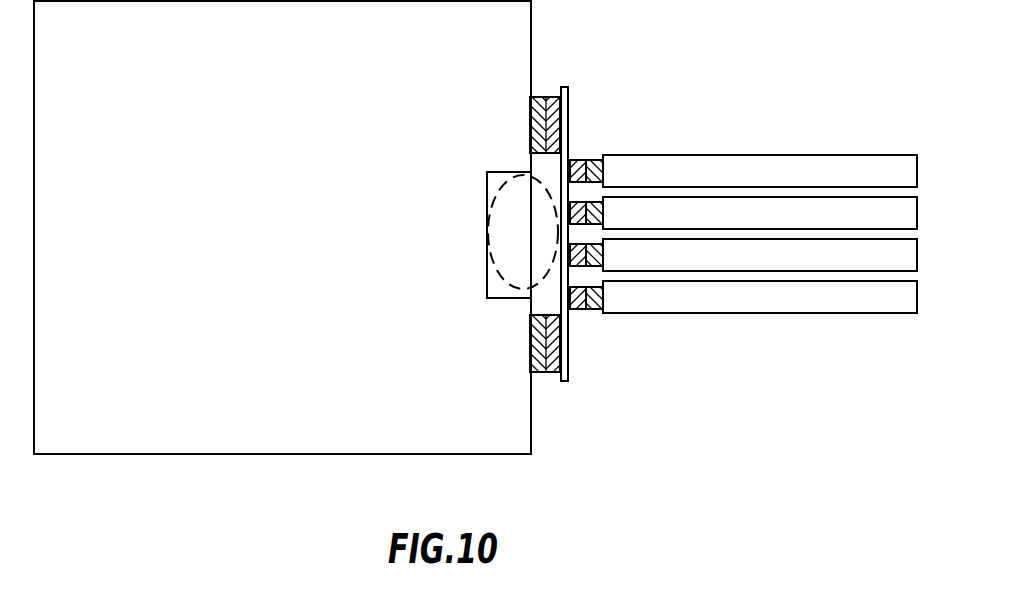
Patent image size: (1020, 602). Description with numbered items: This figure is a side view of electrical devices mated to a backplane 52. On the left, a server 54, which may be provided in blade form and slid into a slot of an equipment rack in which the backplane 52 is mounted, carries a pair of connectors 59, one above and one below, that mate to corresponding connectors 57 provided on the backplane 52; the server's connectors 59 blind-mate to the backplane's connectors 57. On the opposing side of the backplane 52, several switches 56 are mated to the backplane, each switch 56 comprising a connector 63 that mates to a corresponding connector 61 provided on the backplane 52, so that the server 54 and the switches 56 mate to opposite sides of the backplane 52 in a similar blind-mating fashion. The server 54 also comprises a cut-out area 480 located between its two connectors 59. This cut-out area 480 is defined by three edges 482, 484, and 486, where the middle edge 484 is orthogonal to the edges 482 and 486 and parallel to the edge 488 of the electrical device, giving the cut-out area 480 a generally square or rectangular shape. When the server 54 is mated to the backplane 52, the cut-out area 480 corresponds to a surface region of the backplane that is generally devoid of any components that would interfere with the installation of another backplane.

The backplane 52 is at (596, 87).
The server 54 is at (302, 181).
The switch 56 is at (820, 184).
The connector 57 is at (551, 96).
The connector 59 is at (539, 96).
The connector 61 is at (574, 158).
The connector 63 is at (594, 158).
The cut-out area 480 is at (522, 241).
The edge 482 is at (501, 171).
The edge 484 is at (487, 283).
The edge 486 is at (512, 299).
The edge 488 is at (530, 28).